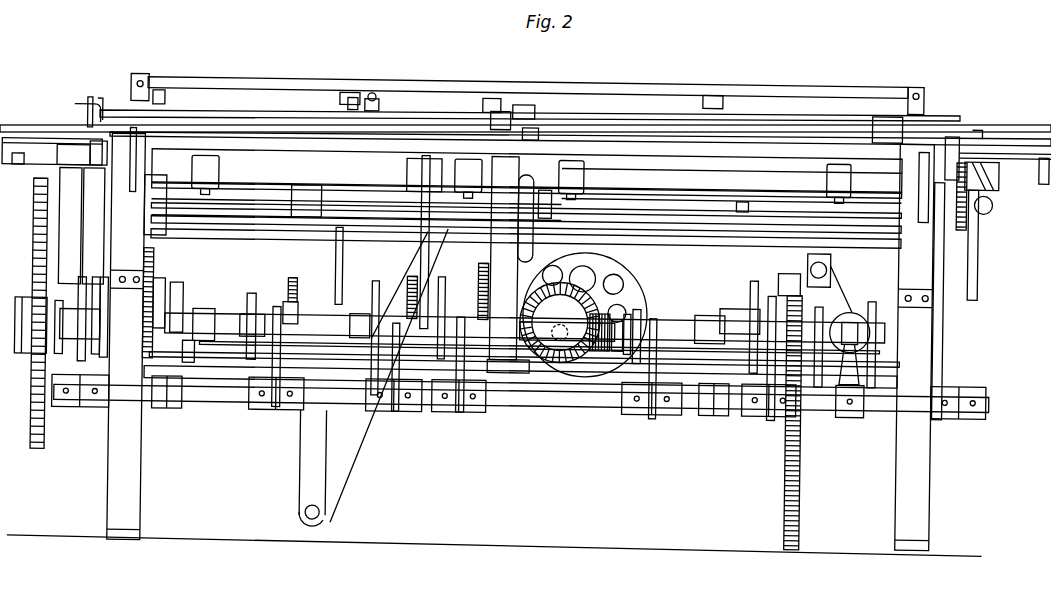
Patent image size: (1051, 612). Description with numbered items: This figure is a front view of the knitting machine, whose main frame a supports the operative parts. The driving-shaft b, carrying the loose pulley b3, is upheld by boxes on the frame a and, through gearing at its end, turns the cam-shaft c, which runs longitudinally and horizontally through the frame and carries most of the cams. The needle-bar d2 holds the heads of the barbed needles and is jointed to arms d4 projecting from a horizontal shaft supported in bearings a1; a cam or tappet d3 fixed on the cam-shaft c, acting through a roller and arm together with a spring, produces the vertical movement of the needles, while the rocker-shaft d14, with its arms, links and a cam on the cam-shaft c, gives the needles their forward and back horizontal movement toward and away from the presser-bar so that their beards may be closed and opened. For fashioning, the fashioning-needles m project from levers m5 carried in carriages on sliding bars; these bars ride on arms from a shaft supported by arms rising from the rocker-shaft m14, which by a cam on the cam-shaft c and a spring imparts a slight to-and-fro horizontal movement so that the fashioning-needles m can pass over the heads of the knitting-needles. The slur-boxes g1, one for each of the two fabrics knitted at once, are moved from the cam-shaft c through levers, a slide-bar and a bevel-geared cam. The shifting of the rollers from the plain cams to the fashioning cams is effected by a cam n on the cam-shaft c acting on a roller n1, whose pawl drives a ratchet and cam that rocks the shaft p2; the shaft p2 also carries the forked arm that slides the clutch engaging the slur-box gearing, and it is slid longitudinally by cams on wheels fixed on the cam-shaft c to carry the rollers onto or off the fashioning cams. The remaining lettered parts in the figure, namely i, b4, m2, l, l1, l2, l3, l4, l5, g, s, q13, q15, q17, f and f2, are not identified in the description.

The main frame a is at (521, 341).
The screw i is at (515, 287).
The cam-shaft c is at (525, 328).
The driving-shaft b is at (526, 231).
The loose pulley b3 is at (70, 225).
The side plate b4 is at (93, 226).
The cam or tappet d3 is at (527, 179).
The arms d4 is at (521, 179).
The rocker-shaft d14 is at (390, 211).
The needle-bar d2 is at (526, 218).
The rocker-shaft m14 is at (277, 200).
The fashioning-needles m is at (378, 102).
The rod m2 is at (530, 117).
The lever m5 is at (494, 104).
The hanger l4 is at (531, 99).
The hook l1 is at (159, 97).
The hook arm l5 is at (89, 110).
The end bracket l2 is at (916, 106).
The catch box l3 is at (982, 176).
The lever bar l is at (955, 302).
The bearings a1 is at (916, 187).
The lug g is at (741, 203).
The slur-boxes g1 is at (30, 325).
The shaft p2 is at (520, 396).
The cam n is at (201, 317).
The roller n1 is at (210, 327).
The spring s is at (388, 290).
The wheel opening q17 is at (568, 278).
The wheel opening q15 is at (612, 298).
The clutch block q13 is at (689, 324).
The cam lever f is at (834, 303).
The slide f2 is at (840, 353).